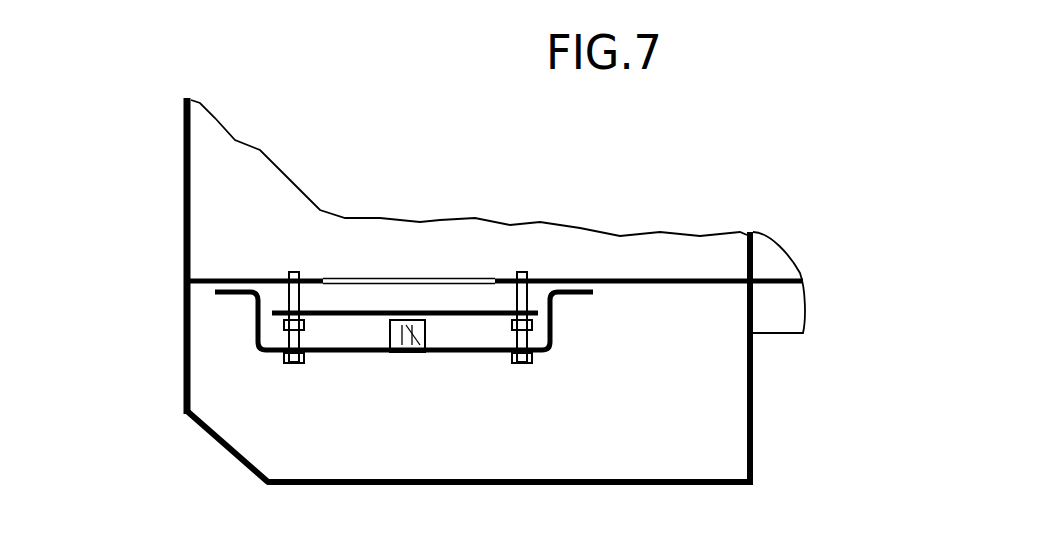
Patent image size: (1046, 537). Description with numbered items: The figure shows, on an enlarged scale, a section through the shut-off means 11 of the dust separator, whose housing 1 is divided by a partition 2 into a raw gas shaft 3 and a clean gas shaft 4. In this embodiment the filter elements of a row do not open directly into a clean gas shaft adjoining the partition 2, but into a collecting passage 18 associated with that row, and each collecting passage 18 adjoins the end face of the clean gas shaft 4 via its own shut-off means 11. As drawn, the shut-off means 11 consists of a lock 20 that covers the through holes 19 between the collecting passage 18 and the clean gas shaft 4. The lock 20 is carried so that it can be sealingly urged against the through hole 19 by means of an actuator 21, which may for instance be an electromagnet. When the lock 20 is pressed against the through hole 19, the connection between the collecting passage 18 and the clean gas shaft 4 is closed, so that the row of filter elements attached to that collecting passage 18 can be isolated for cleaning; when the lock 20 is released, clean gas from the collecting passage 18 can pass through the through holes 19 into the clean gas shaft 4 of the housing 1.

The housing 1 is at (184, 178).
The partition 2 is at (753, 248).
The raw gas shaft 3 is at (772, 262).
The clean gas shaft 4 is at (695, 430).
The shut-off means 11 is at (254, 346).
The collecting passage 18 is at (227, 227).
The through hole 19 is at (442, 277).
The lock 20 is at (367, 310).
The actuator 21 is at (415, 332).